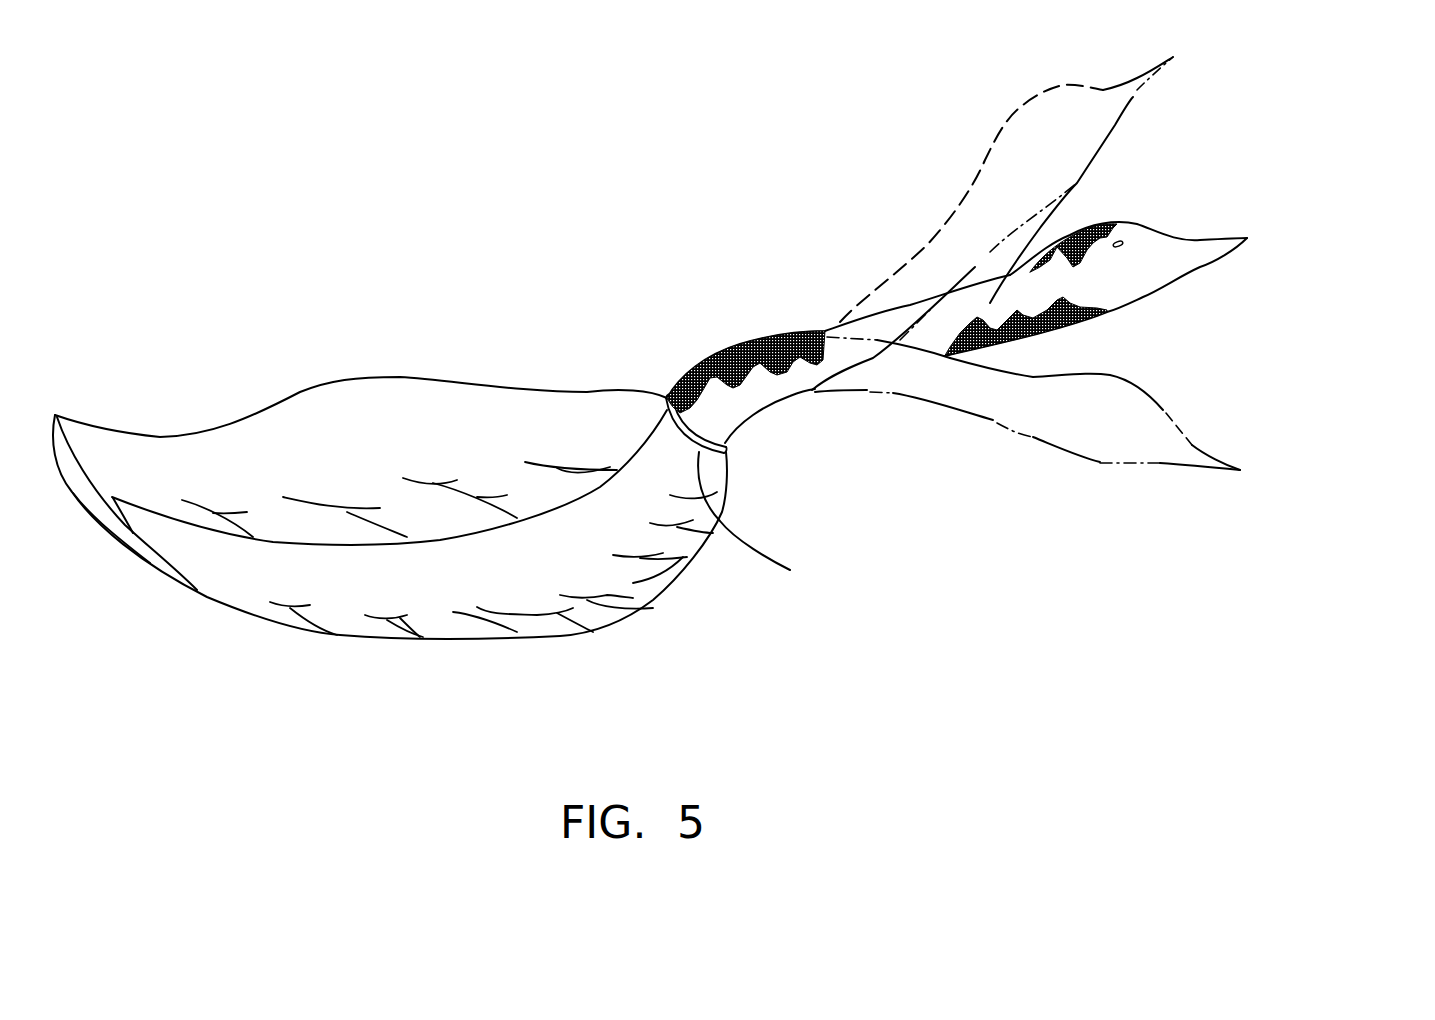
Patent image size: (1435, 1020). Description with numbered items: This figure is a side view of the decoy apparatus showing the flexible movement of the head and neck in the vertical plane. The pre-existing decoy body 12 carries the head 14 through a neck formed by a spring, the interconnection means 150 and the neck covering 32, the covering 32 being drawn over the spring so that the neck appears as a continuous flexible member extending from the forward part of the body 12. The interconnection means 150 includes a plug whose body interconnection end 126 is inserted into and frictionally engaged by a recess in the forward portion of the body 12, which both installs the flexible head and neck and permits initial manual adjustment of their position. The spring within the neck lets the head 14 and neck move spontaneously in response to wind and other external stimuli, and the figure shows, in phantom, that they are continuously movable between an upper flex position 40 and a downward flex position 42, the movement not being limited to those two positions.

The body 12 is at (343, 442).
The body interconnection end 126 is at (790, 570).
The interconnection means 150 is at (754, 416).
The covering 32 is at (1010, 275).
The head 14 is at (1133, 264).
The upper flex position 40 is at (1230, 72).
The downward flex position 42 is at (1290, 473).